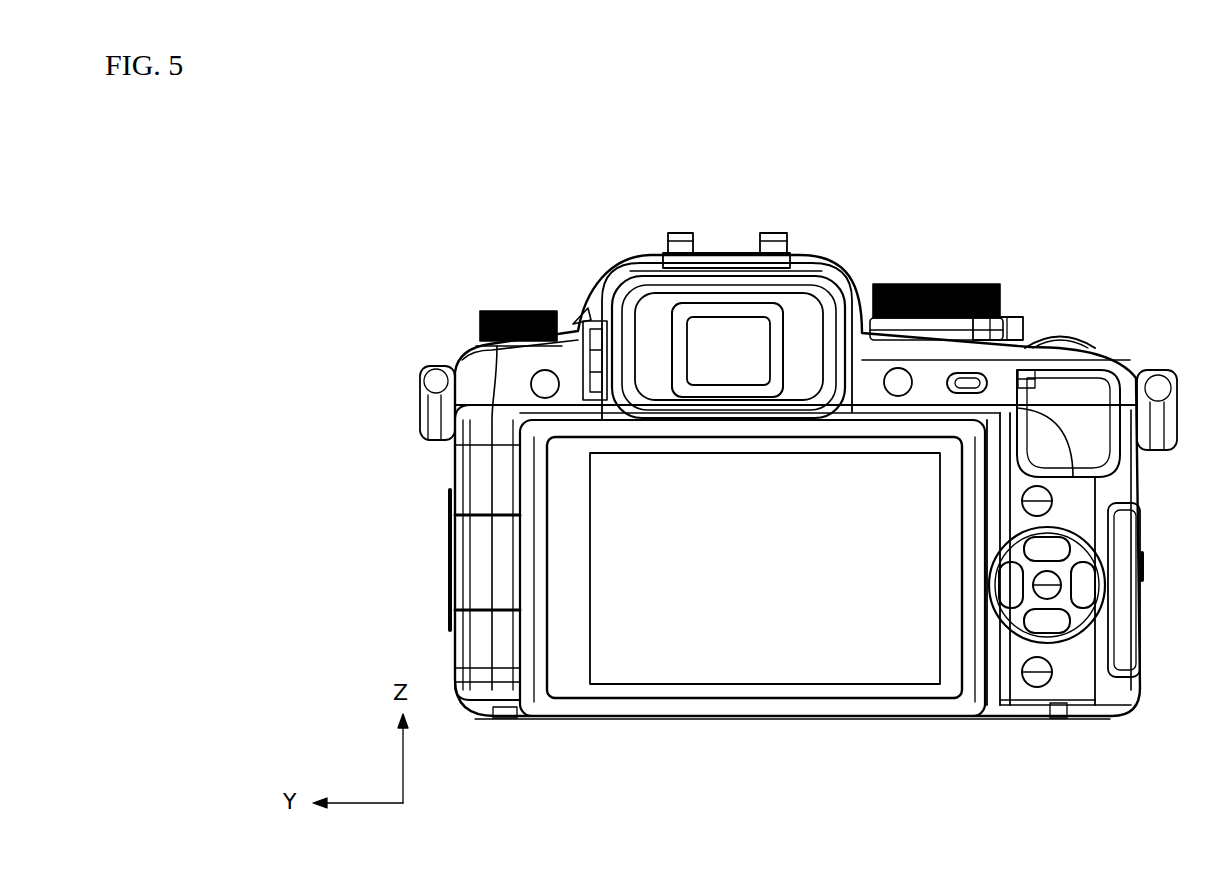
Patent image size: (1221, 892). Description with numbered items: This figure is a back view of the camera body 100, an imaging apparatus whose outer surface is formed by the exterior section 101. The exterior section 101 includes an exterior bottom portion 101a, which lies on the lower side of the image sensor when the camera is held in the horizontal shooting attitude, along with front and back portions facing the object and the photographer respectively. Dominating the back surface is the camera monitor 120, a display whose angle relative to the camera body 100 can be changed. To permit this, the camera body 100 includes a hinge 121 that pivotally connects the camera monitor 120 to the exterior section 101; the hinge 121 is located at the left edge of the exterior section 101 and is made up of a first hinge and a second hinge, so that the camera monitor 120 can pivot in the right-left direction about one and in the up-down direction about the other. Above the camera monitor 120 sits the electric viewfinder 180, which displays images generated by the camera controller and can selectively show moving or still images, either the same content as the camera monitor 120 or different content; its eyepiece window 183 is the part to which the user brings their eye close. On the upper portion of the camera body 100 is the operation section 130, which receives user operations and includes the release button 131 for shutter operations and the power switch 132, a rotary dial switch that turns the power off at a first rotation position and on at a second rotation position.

The camera body 100 is at (578, 268).
The exterior section 101 is at (1077, 682).
The exterior bottom portion 101a is at (603, 718).
The camera monitor 120 is at (763, 663).
The hinge 121 is at (455, 550).
The operation section 130 is at (1034, 265).
The release button 131 is at (1085, 335).
The power switch 132 is at (1022, 322).
The electric viewfinder 180 is at (810, 326).
The eyepiece window 183 is at (733, 312).